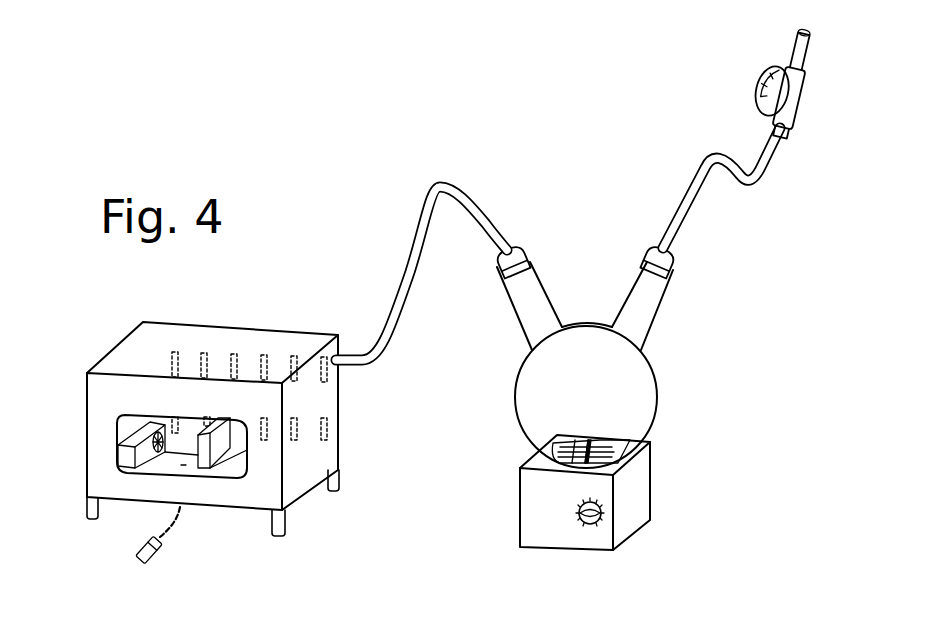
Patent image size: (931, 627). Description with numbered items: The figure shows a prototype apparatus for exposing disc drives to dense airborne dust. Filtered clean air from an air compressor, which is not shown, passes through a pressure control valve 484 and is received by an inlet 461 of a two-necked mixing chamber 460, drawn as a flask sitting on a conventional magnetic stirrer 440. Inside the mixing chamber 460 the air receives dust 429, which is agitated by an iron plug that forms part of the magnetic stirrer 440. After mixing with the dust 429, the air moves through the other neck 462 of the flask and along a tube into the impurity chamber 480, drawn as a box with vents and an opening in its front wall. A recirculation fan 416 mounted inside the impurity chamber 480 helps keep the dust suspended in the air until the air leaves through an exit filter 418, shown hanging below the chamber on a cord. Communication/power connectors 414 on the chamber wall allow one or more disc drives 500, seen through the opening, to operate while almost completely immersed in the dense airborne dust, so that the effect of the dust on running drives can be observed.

The impurity chamber 480 is at (142, 406).
The recirculation fan 416 is at (127, 458).
The disc drive 500 is at (217, 457).
The communication/power connectors 414 is at (328, 431).
The exit filter 418 is at (138, 550).
The mixing chamber 460 is at (606, 377).
The left flask neck 462 is at (528, 310).
The inlet 461 is at (648, 301).
The pressure control valve 484 is at (793, 118).
The dust 429 is at (604, 447).
The magnetic stirrer 440 is at (572, 502).